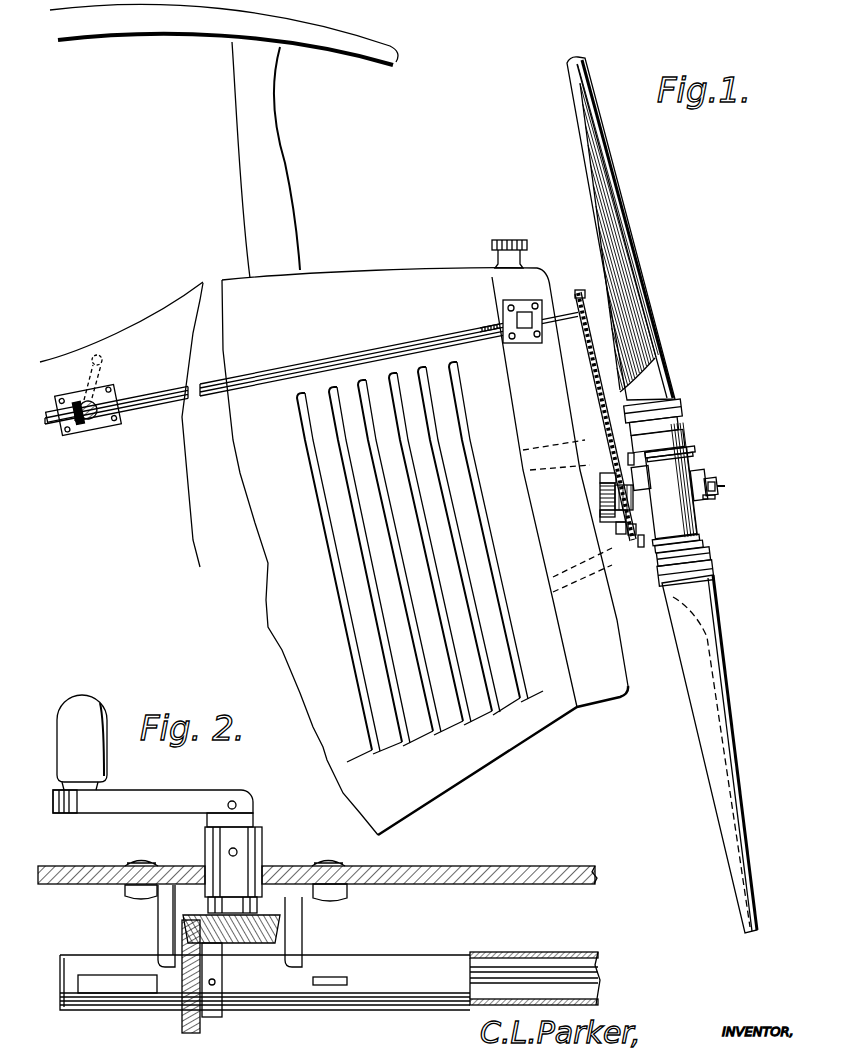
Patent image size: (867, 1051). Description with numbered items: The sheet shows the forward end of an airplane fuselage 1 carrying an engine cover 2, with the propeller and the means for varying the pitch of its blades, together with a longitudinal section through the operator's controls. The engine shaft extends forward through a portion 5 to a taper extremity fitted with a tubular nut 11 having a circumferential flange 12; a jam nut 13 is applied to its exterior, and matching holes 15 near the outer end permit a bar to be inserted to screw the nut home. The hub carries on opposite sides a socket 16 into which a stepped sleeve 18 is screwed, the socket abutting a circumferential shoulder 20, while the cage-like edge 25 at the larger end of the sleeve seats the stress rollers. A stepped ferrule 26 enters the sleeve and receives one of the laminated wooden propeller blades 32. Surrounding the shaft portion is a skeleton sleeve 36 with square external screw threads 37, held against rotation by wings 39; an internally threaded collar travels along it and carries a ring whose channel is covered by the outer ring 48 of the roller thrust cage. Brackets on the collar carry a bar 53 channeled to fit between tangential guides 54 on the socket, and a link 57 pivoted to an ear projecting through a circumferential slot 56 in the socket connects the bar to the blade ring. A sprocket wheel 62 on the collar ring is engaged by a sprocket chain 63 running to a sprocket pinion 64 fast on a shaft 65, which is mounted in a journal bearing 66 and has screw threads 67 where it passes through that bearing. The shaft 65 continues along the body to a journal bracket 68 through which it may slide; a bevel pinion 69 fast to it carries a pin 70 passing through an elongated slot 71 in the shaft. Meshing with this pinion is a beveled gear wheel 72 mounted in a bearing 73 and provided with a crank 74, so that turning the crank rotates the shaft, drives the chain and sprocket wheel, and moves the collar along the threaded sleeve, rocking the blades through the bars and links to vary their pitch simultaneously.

In FIG. 1, the airplane fuselage 1 is at (184, 295).
In FIG. 2, the airplane fuselage 1 is at (477, 865).
In FIG. 1, the engine cover 2 is at (360, 270).
In FIG. 1, the portion of the shaft 5 is at (600, 505).
In FIG. 1, the tubular nut 11 is at (718, 486).
In FIG. 1, the circumferential flange 12 is at (718, 495).
In FIG. 1, the jam nut 13 is at (713, 477).
In FIG. 1, the matching holes 15 is at (716, 482).
In FIG. 1, the socket 16 is at (671, 492).
In FIG. 1, the stepped sleeve 18 is at (686, 452).
In FIG. 1, the circumferential shoulder 20 is at (691, 461).
In FIG. 1, the cage-like edge 25 is at (683, 427).
In FIG. 1, the ferrule 26 is at (681, 411).
In FIG. 1, the propeller blades 32 is at (652, 312).
In FIG. 1, the skeleton sleeve 36 is at (603, 517).
In FIG. 1, the external screw threads 37 is at (600, 488).
In FIG. 1, the wings 39 is at (608, 472).
In FIG. 1, the outer ring 48 is at (619, 534).
In FIG. 1, the bar 53 is at (629, 475).
In FIG. 1, the guides 54 is at (653, 486).
In FIG. 1, the circumferential slot 56 is at (688, 448).
In FIG. 1, the link 57 is at (686, 438).
In FIG. 1, the sprocket wheel 62 is at (624, 550).
In FIG. 1, the sprocket chain 63 is at (599, 378).
In FIG. 1, the sprocket pinion 64 is at (583, 294).
In FIG. 1, the shaft 65 is at (347, 363).
In FIG. 2, the shaft 65 is at (450, 953).
In FIG. 1, the journal bearing 66 is at (530, 344).
In FIG. 1, the screw threads 67 is at (497, 326).
In FIG. 1, the journal bracket 68 is at (120, 421).
In FIG. 2, the journal bracket 68 is at (166, 938).
In FIG. 1, the bevel pinion 69 is at (82, 432).
In FIG. 2, the bevel pinion 69 is at (196, 1030).
In FIG. 2, the pin 70 is at (212, 998).
In FIG. 1, the elongated slot 71 is at (50, 425).
In FIG. 2, the elongated slot 71 is at (332, 986).
In FIG. 1, the beveled gear wheel 72 is at (99, 422).
In FIG. 2, the beveled gear wheel 72 is at (267, 918).
In FIG. 2, the bearing 73 is at (206, 851).
In FIG. 1, the crank 74 is at (105, 371).
In FIG. 2, the crank 74 is at (150, 797).